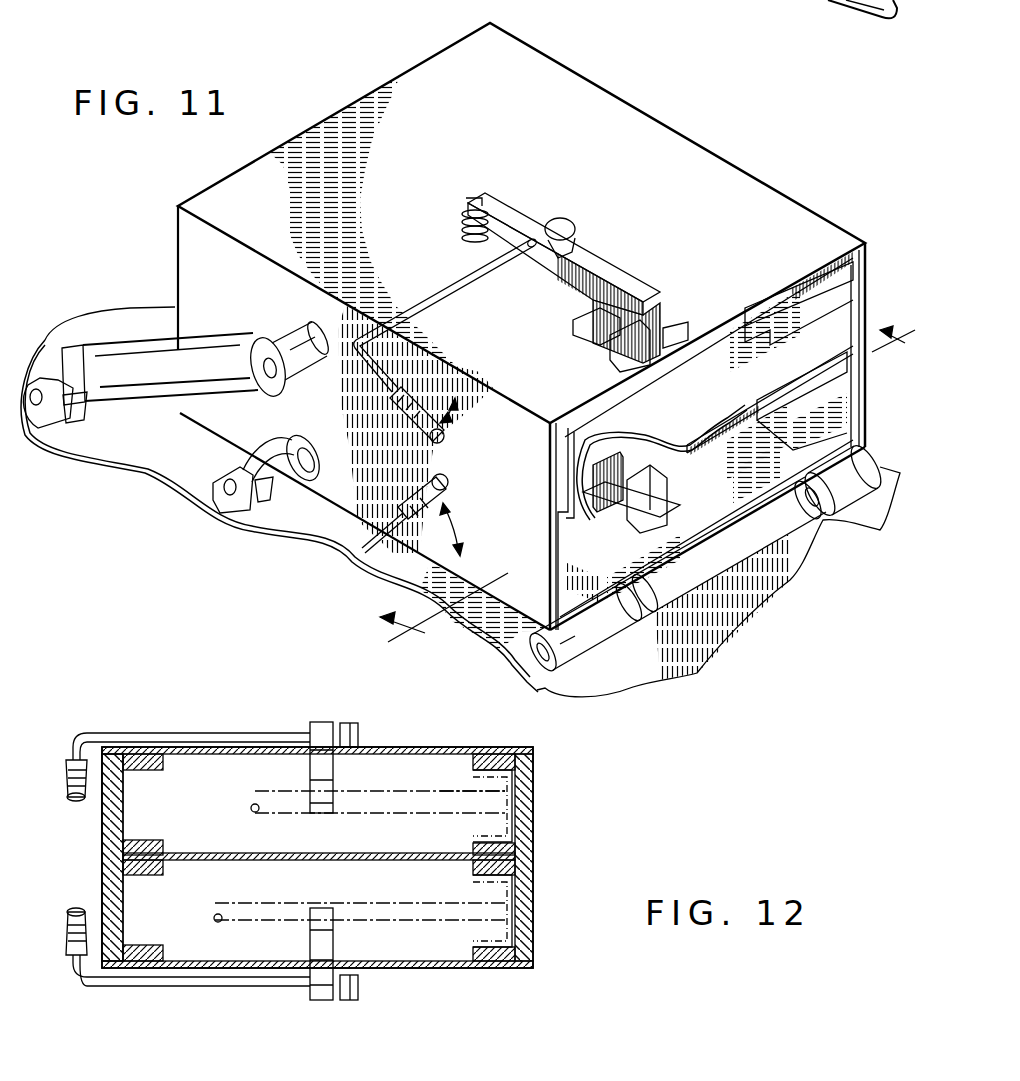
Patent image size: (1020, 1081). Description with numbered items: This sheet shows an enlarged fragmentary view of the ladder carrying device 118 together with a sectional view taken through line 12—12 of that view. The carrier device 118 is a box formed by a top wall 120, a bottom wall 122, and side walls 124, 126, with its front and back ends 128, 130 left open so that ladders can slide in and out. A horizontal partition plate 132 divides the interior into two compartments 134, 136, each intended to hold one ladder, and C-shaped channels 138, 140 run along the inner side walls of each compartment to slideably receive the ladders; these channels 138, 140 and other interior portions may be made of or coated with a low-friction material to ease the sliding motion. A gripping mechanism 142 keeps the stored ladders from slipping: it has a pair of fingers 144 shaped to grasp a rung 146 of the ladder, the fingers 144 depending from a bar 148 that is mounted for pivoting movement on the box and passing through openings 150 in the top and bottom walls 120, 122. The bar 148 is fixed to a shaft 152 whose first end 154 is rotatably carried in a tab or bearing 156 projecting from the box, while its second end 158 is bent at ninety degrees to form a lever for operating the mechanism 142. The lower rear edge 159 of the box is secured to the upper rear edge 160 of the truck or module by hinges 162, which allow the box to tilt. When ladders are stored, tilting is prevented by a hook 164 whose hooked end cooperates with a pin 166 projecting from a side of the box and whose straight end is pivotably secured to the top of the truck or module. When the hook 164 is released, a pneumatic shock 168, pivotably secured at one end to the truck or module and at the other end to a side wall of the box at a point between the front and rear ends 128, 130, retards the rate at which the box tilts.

In FIG. 11, the section line 12— 12 is at (654, 500).
In FIG. 11, the ladder carrying device 118 is at (722, 149).
In FIG. 11, the top wall 120 is at (585, 92).
In FIG. 12, the top wall 120 is at (424, 748).
In FIG. 11, the bottom wall 122 is at (652, 536).
In FIG. 12, the bottom wall 122 is at (442, 968).
In FIG. 11, the side wall 124 is at (243, 272).
In FIG. 12, the side wall 124 is at (100, 848).
In FIG. 12, the side wall 126 is at (536, 842).
In FIG. 11, the front end 128 is at (362, 108).
In FIG. 11, the back end 130 is at (790, 520).
In FIG. 11, the horizontal partition plate 132 is at (712, 415).
In FIG. 12, the horizontal partition plate 132 is at (212, 870).
In FIG. 12, the compartment 134 is at (210, 790).
In FIG. 12, the compartment 136 is at (195, 940).
In FIG. 11, the C-shaped channel 138 is at (556, 457).
In FIG. 12, the C-shaped channel 138 is at (125, 760).
In FIG. 11, the C-shaped channel 140 is at (866, 300).
In FIG. 12, the C-shaped channel 140 is at (535, 800).
In FIG. 11, the gripping mechanism 142 is at (626, 253).
In FIG. 11, the fingers 144 is at (615, 372).
In FIG. 12, the fingers 144 is at (340, 770).
In FIG. 12, the rung 146 is at (437, 808).
In FIG. 11, the bar 148 is at (655, 290).
In FIG. 11, the openings 150 is at (676, 326).
In FIG. 11, the shaft 152 is at (466, 274).
In FIG. 11, the first end 154 is at (572, 221).
In FIG. 11, the tab or bearing 156 is at (572, 185).
In FIG. 11, the second end 158 is at (383, 393).
In FIG. 11, the lower rear edge 159 is at (647, 612).
In FIG. 11, the upper rear edge 160 is at (640, 680).
In FIG. 11, the hinges 162 is at (838, 542).
In FIG. 11, the hook 164 is at (281, 451).
In FIG. 11, the pin 166 is at (284, 497).
In FIG. 11, the pneumatic shock 168 is at (126, 405).